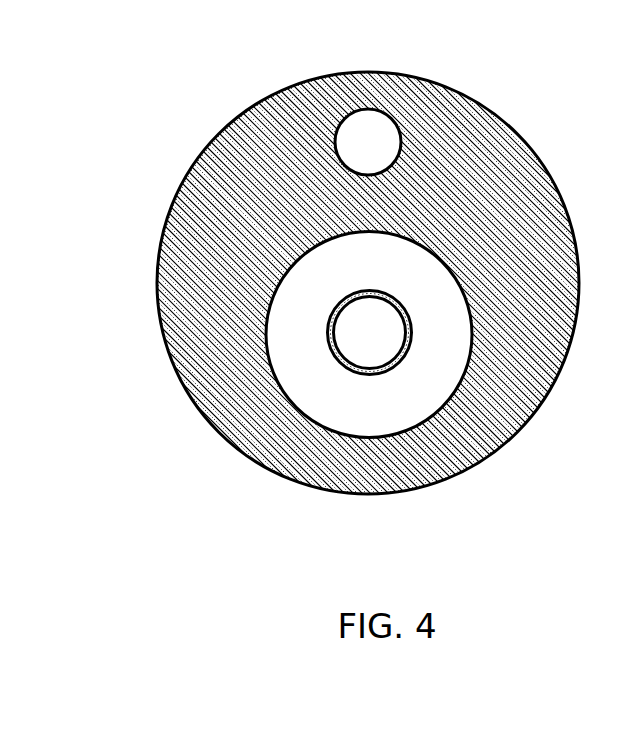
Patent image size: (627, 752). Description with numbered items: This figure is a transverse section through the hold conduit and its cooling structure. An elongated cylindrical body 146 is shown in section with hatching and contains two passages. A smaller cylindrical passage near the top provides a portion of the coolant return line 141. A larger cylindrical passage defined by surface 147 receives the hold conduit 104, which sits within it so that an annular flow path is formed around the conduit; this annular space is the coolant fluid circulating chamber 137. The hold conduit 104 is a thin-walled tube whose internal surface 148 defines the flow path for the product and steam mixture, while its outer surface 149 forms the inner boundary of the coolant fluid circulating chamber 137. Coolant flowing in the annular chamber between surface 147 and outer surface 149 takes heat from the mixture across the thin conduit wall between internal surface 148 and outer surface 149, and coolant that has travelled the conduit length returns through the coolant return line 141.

The hold conduit 104 is at (415, 357).
The coolant fluid circulating chamber 137 is at (348, 270).
The coolant return line 141 is at (382, 111).
The elongated cylindrical body 146 is at (188, 304).
The surface 147 is at (421, 236).
The internal surface 148 is at (380, 372).
The outer surface 149 is at (326, 329).